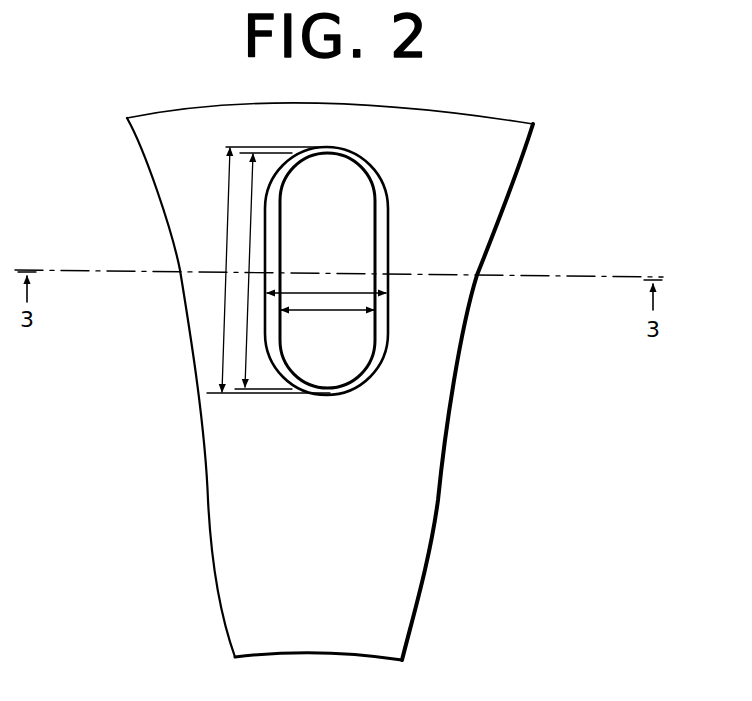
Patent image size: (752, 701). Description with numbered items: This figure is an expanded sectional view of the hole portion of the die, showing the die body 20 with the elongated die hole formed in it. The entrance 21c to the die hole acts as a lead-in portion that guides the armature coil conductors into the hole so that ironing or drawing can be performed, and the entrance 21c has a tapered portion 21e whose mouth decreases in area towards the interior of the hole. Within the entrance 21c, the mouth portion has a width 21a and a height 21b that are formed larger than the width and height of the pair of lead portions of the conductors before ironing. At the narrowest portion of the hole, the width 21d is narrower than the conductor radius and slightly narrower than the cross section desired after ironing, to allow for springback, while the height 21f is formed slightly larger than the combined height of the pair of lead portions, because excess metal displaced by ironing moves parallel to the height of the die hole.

The turbine blade 20 is at (220, 547).
The width of the mouth portion 21a is at (383, 286).
The height of the mouth portion 21b is at (228, 232).
The entrance 21c is at (275, 188).
The width at the narrowest portion 21d is at (347, 315).
The tapered portion 21e is at (387, 257).
The height at the narrowest portion 21f is at (247, 308).